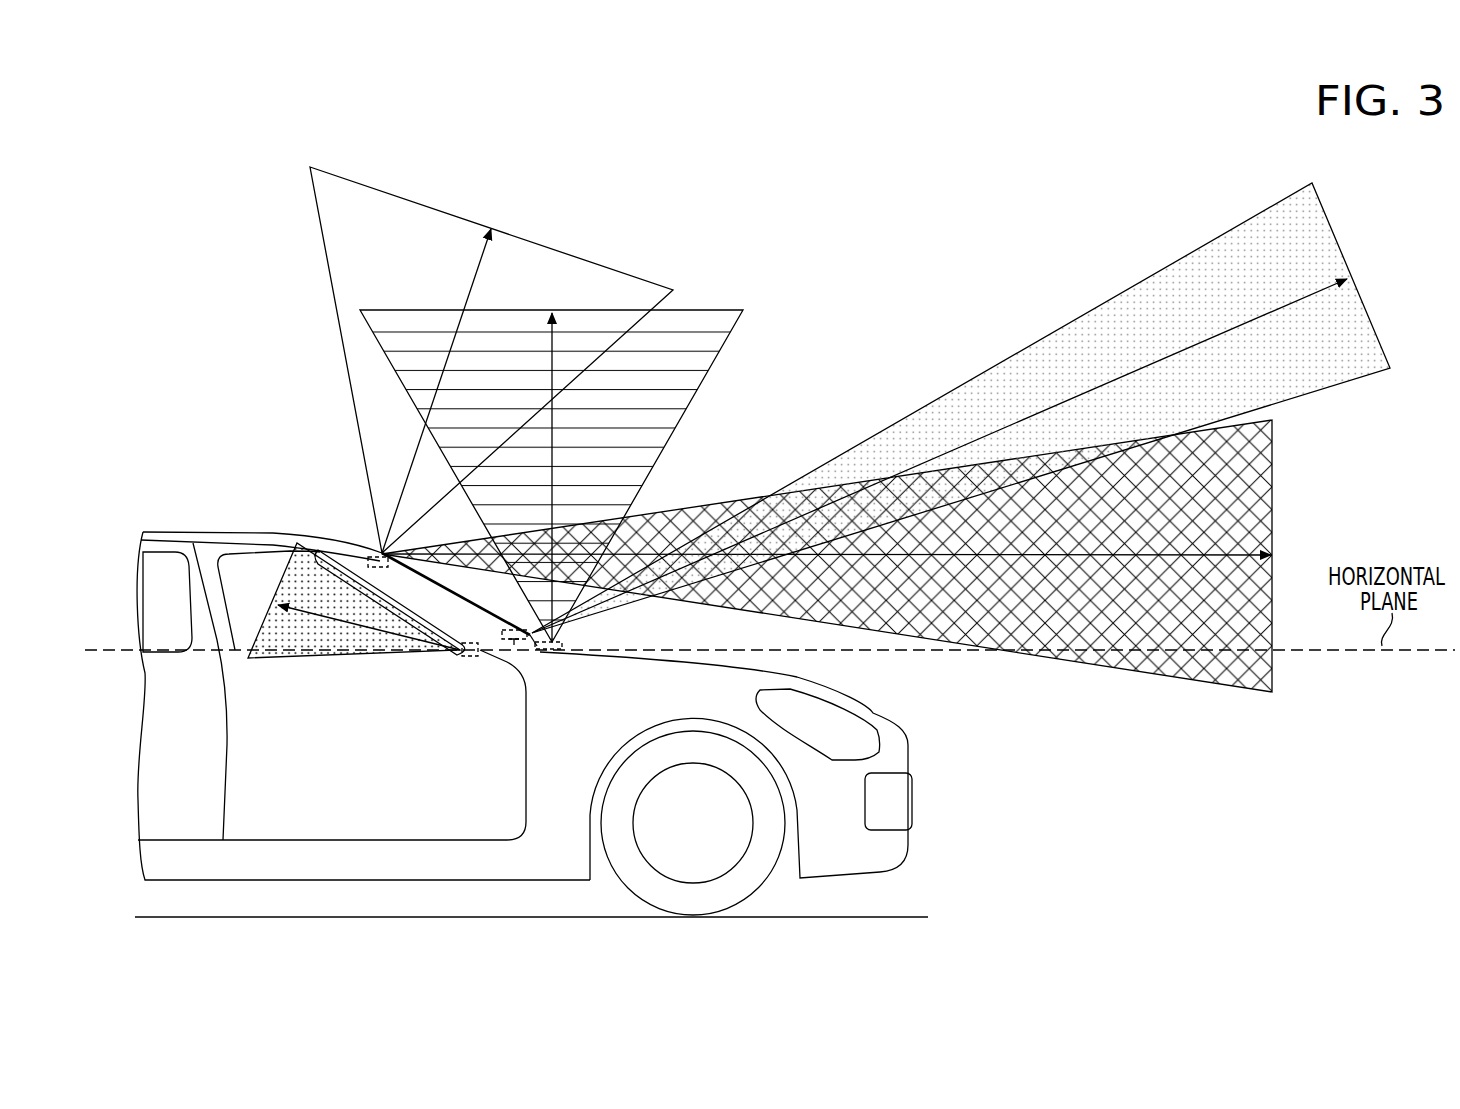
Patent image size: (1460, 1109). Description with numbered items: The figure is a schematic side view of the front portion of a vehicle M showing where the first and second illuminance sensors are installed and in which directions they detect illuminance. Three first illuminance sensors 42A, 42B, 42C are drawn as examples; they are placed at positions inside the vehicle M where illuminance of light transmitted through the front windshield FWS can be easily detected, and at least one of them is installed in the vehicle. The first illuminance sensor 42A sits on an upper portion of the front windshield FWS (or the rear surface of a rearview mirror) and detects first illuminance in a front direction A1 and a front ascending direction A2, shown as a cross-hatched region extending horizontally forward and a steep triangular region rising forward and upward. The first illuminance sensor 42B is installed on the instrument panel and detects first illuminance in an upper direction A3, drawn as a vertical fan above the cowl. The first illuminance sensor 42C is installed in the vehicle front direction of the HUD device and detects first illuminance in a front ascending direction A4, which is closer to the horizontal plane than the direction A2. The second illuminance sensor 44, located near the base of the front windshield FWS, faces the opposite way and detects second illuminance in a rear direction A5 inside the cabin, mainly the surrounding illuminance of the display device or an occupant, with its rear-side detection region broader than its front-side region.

The vehicle M is at (910, 753).
The first illuminance sensor 42A is at (372, 557).
The first illuminance sensor 42B is at (575, 648).
The first illuminance sensor 42C is at (521, 647).
The second illuminance sensor 44 is at (468, 658).
The front windshield FWS is at (471, 605).
The front direction A1 is at (1170, 560).
The front ascending direction A2 is at (475, 272).
The upper direction A3 is at (553, 347).
The front ascending direction A4 is at (1257, 317).
The rear direction A5 is at (320, 615).